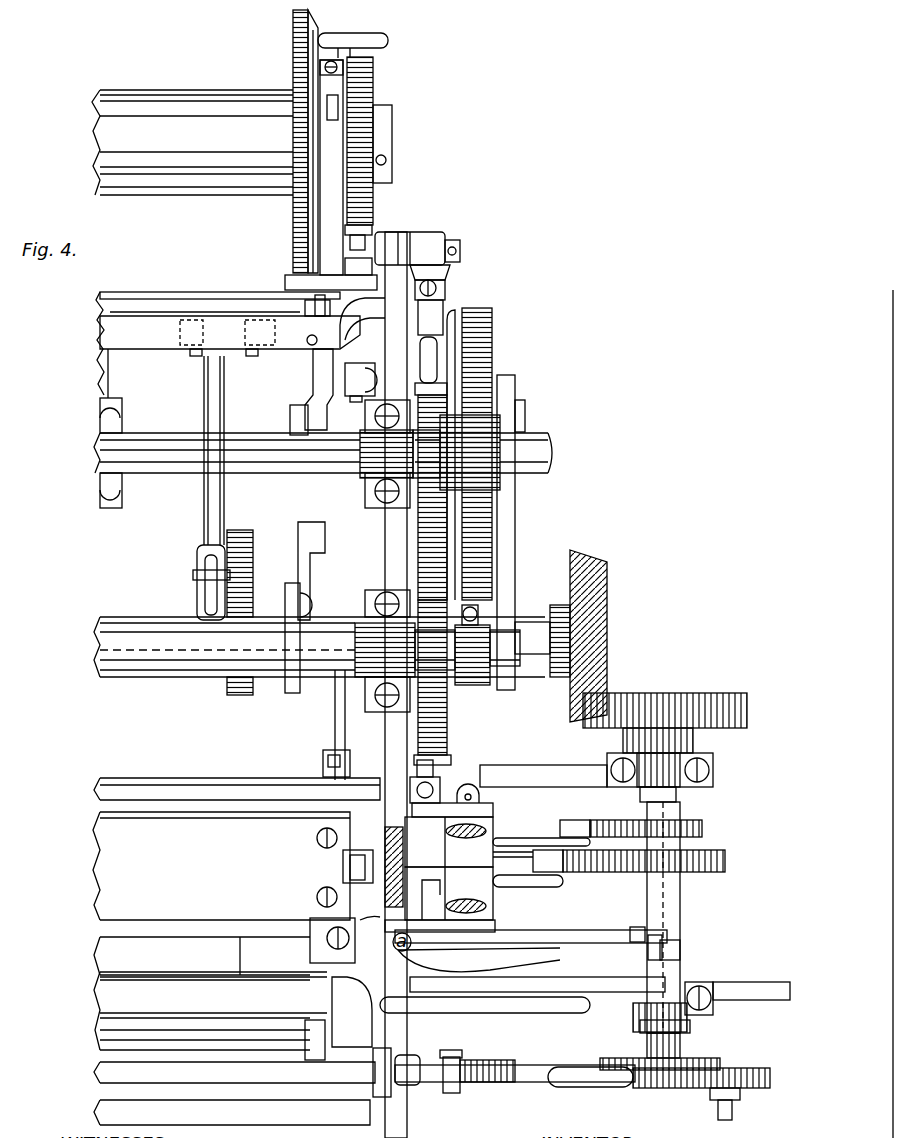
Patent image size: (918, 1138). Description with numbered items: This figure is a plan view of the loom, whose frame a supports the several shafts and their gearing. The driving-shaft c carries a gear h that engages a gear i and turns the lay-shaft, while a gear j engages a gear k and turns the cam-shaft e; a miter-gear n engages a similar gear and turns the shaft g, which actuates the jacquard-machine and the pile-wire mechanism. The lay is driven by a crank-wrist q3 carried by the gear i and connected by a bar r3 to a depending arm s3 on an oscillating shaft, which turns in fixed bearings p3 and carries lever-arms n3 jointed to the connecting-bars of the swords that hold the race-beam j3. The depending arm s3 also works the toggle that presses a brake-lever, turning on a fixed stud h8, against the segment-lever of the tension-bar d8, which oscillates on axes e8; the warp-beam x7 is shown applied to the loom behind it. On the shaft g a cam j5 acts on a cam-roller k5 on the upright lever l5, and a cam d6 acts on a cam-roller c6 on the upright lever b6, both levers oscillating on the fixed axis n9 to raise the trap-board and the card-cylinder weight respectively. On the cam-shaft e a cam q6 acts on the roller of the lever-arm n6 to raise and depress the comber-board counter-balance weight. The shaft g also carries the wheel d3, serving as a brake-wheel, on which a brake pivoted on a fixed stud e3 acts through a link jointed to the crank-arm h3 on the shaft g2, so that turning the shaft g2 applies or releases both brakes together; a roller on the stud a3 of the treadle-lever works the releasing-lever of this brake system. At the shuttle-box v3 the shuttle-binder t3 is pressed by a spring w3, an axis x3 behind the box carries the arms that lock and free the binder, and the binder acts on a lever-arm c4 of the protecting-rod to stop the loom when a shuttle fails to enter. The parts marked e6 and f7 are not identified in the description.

The warp-beam x7 is at (192, 142).
The fixed stud h8 is at (430, 248).
The axes e8 is at (242, 320).
The bar d8 is at (228, 345).
The driving-shaft c is at (323, 453).
The gear i is at (477, 454).
The crank-wrist q3 is at (534, 416).
The gear h is at (470, 452).
The gear j is at (432, 497).
The loom-frame a is at (396, 685).
The bar r3 is at (507, 532).
The lever-arm n6 is at (203, 571).
The cam q6 is at (221, 583).
The gear k is at (432, 680).
The cam-shaft e is at (532, 638).
The miter-gear n is at (648, 651).
The stud a3 is at (319, 647).
The fixed bearings p3 is at (385, 650).
The depending arm s3 is at (472, 645).
The lever-arms n3 is at (340, 700).
The fixed axis n9 is at (470, 790).
The frame e6 is at (221, 866).
The upright lever b6 is at (449, 842).
The upright lever l5 is at (449, 893).
The cam-roller c6 is at (575, 828).
The cam d6 is at (646, 828).
The cam-roller k5 is at (548, 861).
The cam j5 is at (644, 861).
The shaft g is at (663, 917).
The spring w3 is at (372, 914).
The axis x3 is at (531, 935).
The shuttle-box v3 is at (479, 966).
The lever-arm c4 is at (680, 952).
The shuttle-binder t3 is at (737, 983).
The race-beam j3 is at (210, 1011).
The shaft g2 is at (234, 1070).
The crank-arm h3 is at (399, 1077).
The fixed stud e3 is at (477, 1079).
The lever f7 is at (590, 1087).
The wheel d3 is at (685, 1089).